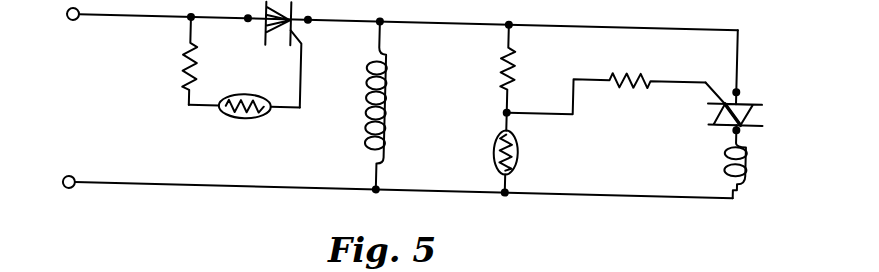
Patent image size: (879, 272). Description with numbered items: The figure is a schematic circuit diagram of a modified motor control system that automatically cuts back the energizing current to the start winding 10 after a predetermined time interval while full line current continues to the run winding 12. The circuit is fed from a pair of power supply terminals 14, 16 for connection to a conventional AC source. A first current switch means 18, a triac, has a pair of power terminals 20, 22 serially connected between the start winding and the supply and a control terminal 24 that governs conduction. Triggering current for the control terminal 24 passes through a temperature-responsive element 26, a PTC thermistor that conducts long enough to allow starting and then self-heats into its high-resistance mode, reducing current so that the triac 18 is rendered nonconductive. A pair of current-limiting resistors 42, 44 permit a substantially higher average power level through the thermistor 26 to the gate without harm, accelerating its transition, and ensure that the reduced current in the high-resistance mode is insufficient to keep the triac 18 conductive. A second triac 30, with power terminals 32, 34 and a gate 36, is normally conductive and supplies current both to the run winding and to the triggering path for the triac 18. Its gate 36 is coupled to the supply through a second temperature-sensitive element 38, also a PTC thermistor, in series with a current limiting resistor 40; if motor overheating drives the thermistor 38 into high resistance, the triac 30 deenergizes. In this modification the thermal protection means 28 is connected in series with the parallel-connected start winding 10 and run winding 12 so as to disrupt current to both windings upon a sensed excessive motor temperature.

The start winding 10 is at (750, 157).
The run winding 12 is at (389, 93).
The power supply terminal 14 is at (68, 10).
The power supply terminal 16 is at (73, 176).
The current switch means 18 is at (750, 97).
The power terminal 20 is at (742, 116).
The power terminal 22 is at (742, 74).
The control terminal 24 is at (729, 54).
The temperature-responsive element 26 is at (521, 141).
The thermal protection means 28 is at (252, 71).
The triac 30 is at (265, 12).
The power terminal 32 is at (245, 15).
The power terminal 34 is at (312, 16).
The gate 36 is at (297, 30).
The second temperature-sensitive element 38 is at (247, 114).
The current limiting resistor 40 is at (181, 63).
The current-limiting resistor 42 is at (619, 64).
The current-limiting resistor 44 is at (516, 58).